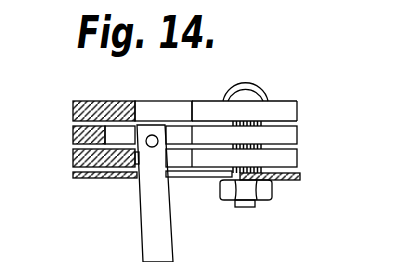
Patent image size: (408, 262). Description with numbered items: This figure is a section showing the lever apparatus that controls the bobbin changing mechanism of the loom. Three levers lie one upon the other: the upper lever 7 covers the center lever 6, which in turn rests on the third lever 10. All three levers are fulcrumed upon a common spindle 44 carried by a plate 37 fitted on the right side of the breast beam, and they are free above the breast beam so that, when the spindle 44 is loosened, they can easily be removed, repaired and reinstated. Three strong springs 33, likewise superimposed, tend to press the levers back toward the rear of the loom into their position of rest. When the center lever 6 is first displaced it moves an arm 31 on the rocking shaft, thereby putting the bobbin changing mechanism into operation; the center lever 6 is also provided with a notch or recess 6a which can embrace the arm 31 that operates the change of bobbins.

The upper lever 7 is at (73, 108).
The center lever 6 is at (73, 135).
The notch or recess 6a is at (117, 138).
The third lever 10 is at (73, 162).
The arm 31 is at (166, 238).
The springs 33 is at (272, 113).
The common spindle 44 is at (262, 125).
The plate 37 is at (296, 182).